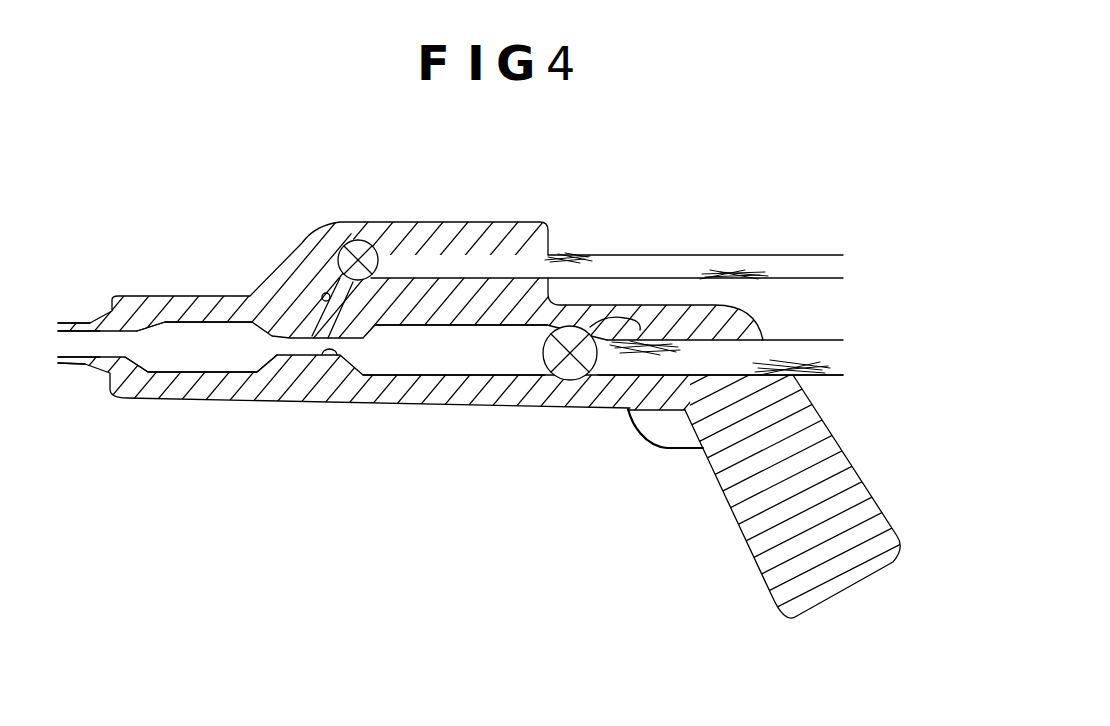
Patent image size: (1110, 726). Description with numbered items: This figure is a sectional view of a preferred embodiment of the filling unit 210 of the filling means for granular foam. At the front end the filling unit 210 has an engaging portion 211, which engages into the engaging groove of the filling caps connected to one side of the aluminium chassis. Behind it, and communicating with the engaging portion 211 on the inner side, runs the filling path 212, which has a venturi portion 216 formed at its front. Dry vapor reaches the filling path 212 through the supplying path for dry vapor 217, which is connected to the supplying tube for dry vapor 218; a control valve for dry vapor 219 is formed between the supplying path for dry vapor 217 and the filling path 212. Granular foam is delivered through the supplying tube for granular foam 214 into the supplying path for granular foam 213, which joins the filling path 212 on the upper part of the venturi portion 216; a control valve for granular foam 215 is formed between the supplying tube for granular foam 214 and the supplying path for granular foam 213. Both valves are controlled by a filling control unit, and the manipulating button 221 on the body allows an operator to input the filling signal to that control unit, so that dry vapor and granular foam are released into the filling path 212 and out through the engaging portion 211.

The filling unit 210 is at (475, 197).
The engaging portion 211 is at (83, 369).
The filling path 212 is at (183, 352).
The supplying path for granular foam 213 is at (320, 297).
The supplying tube for granular foam 214 is at (635, 263).
The control valve for granular foam 215 is at (355, 250).
The venturi portion 216 is at (335, 358).
The supplying path for dry vapor 217 is at (455, 375).
The supplying tube for dry vapor 218 is at (807, 349).
The control valve for dry vapor 219 is at (563, 372).
The manipulating button 221 is at (658, 434).